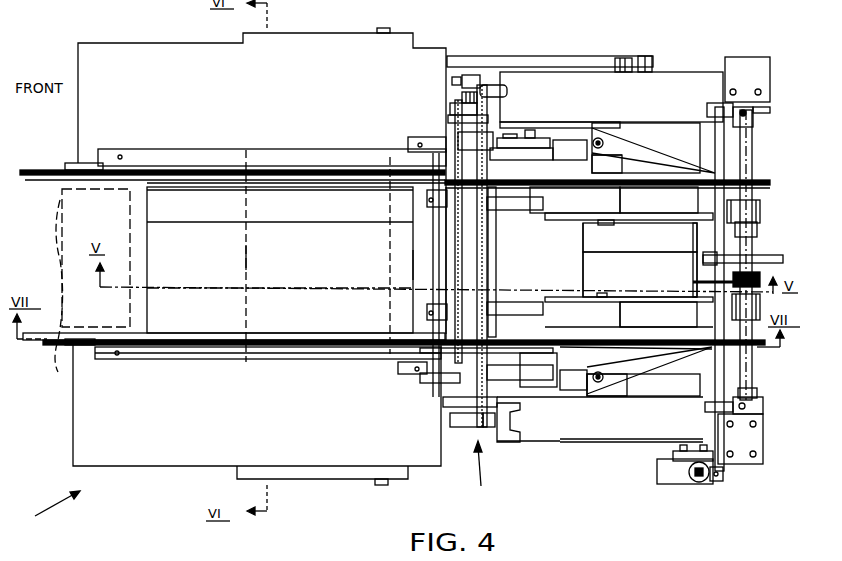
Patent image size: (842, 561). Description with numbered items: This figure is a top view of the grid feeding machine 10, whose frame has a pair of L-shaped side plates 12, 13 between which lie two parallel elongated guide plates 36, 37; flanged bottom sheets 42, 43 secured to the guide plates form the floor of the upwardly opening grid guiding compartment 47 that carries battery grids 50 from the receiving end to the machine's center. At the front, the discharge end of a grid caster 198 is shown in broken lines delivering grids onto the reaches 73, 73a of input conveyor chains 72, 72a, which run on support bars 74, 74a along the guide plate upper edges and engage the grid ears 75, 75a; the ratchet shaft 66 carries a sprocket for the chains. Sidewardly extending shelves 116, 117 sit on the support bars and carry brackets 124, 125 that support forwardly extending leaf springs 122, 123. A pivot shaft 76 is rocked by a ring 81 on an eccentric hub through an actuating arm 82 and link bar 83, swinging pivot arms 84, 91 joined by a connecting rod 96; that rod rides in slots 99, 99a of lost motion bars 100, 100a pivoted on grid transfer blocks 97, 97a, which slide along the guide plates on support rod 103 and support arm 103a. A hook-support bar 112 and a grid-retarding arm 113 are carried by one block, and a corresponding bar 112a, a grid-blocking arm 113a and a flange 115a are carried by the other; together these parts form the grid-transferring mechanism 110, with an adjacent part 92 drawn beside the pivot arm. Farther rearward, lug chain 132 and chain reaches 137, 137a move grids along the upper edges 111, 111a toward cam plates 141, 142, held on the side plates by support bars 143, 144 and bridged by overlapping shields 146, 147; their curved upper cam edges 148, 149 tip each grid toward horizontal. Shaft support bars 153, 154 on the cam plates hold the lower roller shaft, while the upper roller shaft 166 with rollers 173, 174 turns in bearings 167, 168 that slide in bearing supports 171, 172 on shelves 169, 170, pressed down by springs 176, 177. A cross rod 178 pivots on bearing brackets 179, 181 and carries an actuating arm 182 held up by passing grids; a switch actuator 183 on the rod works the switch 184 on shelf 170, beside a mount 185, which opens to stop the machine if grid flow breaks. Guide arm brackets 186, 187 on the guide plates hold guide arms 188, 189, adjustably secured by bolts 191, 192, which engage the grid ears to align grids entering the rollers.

The grid feeding machine 10 is at (44, 511).
The side plate 12 is at (563, 120).
The side plate 13 is at (553, 437).
The guide plate 36 is at (358, 190).
The guide plate 37 is at (163, 332).
The flanged bottom sheet 42 is at (280, 260).
The flanged bottom sheet 43 is at (280, 305).
The grid guiding compartment 47 is at (268, 168).
The grid 50 is at (246, 258).
The ratchet shaft 66 is at (413, 265).
The input conveyor chain 72 is at (45, 345).
The second input conveyor chain 72a is at (50, 165).
The horizontal reach 73 is at (312, 357).
The upper reach 73a is at (216, 184).
The support bar 74 is at (172, 360).
The support bar 74a is at (144, 163).
The ear or lug 75 is at (246, 362).
The ear or lug 75a is at (246, 152).
The pivot shaft 76 is at (458, 284).
The ring 81 is at (642, 56).
The actuating arm 82 is at (632, 58).
The link bar 83 is at (452, 80).
The pivot arm 84 is at (470, 75).
The pivot arm 91 is at (457, 427).
The beam 92 is at (510, 56).
The connecting rod 96 is at (470, 298).
The grid transfer block 97 is at (540, 386).
The grid transfer block 97a is at (527, 138).
The slot 99 is at (500, 427).
The slot 99a is at (489, 113).
The lost motion bar 100 is at (462, 378).
The lost motion bar 100a is at (467, 137).
The support rod 103 is at (533, 370).
The support arm 103a is at (502, 208).
The grid-transferring mechanism 110 is at (484, 472).
The upper edge 111 is at (609, 380).
The upper edge 111a is at (613, 190).
The hook-support bar 112 is at (482, 297).
The housing 112a is at (537, 187).
The grid-retarding arm 113 is at (553, 400).
The grid-blocking arm 113a is at (547, 122).
The carrier 115a is at (552, 141).
The shelf 116 is at (108, 50).
The shelf 117 is at (127, 456).
The leaf spring 122 is at (522, 210).
The leaf spring 123 is at (510, 296).
The bracket 124 is at (408, 140).
The bracket 125 is at (400, 374).
The chain 132 is at (640, 392).
The chain upper reach 137 is at (633, 331).
The upper reach 137a is at (637, 188).
The cam plate 141 is at (643, 224).
The cam plate 142 is at (658, 295).
The support bar 143 is at (670, 137).
The support bar 144 is at (640, 390).
The shield 146 is at (583, 238).
The shield 147 is at (573, 297).
The upper cam edge 148 is at (630, 224).
The upper cam edge 149 is at (618, 295).
The shaft support bar 153 is at (745, 237).
The shaft support bar 154 is at (677, 300).
The upper roller shaft 166 is at (750, 163).
The bearing 167 is at (786, 100).
The bearing 168 is at (763, 407).
The shelf 169 is at (680, 84).
The shelf 170 is at (572, 442).
The bearing support 171 is at (738, 65).
The bearing support 172 is at (742, 455).
The roller 173 is at (752, 212).
The roller 174 is at (757, 334).
The spring 176 is at (743, 110).
The spring 177 is at (750, 388).
The cross rod 178 is at (715, 432).
The bearing bracket 179 is at (708, 110).
The bearing bracket 181 is at (705, 408).
The actuating arm 182 is at (767, 258).
The switch actuator 183 is at (687, 479).
The switch 184 is at (700, 480).
The mount 185 is at (677, 454).
The guide arm bracket 186 is at (607, 167).
The guide arm bracket 187 is at (640, 344).
The guide arm 188 is at (650, 147).
The guide arm 189 is at (610, 387).
The bolt 191 is at (593, 141).
The bolt 192 is at (593, 375).
The grid caster 198 is at (55, 230).